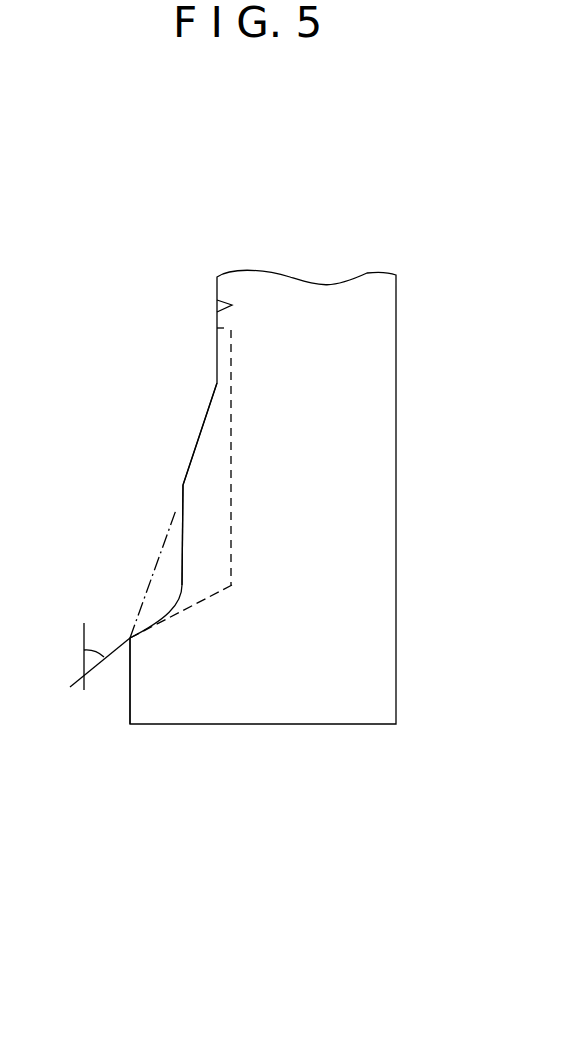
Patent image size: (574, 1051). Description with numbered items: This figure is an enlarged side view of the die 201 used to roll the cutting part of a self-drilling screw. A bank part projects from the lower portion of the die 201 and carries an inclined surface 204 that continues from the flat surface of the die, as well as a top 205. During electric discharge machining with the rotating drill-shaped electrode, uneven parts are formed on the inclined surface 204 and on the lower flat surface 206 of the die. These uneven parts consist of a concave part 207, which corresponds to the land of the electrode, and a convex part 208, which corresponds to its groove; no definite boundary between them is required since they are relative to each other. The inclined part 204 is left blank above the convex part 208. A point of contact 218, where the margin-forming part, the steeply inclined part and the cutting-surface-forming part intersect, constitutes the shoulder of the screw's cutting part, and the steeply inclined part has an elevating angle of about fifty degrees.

The die 201 is at (396, 342).
The inclined surface 204 is at (200, 437).
The top 205 is at (130, 690).
The lower flat surface 206 is at (218, 347).
The concave part 207 is at (232, 502).
The convex part 208 is at (182, 551).
The point of contact 218 is at (232, 585).